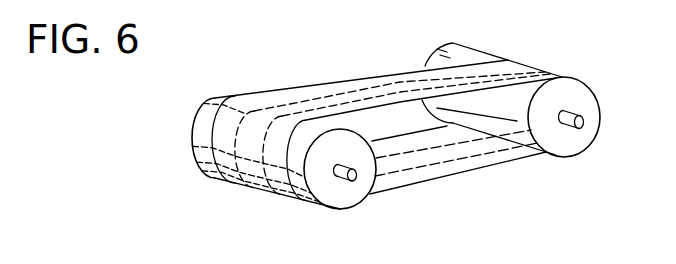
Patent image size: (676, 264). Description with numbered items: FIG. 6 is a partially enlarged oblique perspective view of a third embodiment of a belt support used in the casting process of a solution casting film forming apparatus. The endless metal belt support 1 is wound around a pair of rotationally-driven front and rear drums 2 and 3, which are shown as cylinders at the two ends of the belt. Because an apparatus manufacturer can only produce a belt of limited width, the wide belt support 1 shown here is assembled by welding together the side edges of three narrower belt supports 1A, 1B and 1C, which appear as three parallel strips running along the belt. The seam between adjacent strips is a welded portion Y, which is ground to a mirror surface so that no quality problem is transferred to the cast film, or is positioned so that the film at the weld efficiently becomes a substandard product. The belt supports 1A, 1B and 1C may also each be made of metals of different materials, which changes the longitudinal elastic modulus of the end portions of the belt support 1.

The belt support 1 is at (312, 85).
The belt support 1A is at (279, 108).
The belt support 1B is at (352, 86).
The belt support 1C is at (402, 96).
The welded portion Y is at (508, 61).
The front drum 2 is at (568, 144).
The rear drum 3 is at (342, 198).